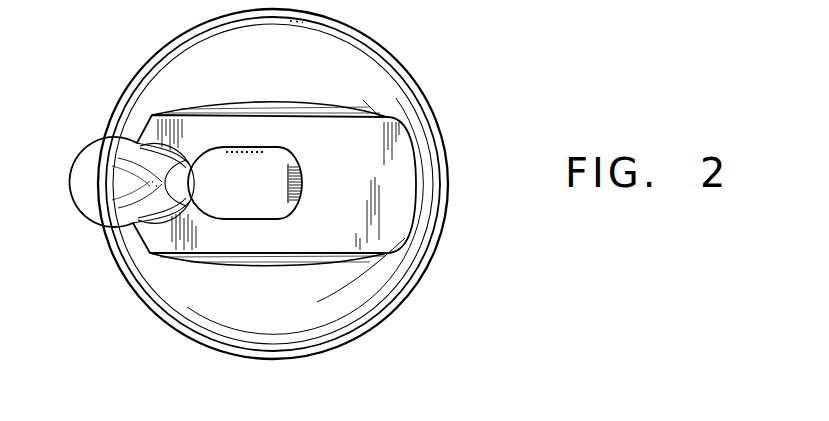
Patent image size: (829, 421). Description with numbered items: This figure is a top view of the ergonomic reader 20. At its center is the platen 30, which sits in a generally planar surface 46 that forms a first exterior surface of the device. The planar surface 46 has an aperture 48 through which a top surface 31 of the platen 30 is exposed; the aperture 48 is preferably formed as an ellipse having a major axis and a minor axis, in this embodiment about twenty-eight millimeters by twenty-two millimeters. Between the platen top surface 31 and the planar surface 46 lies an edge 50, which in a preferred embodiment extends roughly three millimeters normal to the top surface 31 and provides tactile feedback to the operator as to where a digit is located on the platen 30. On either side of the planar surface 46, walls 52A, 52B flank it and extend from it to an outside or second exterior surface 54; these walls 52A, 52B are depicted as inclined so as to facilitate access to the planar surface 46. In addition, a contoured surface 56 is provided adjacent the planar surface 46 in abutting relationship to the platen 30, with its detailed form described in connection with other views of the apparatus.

The ergonomic reader 20 is at (408, 83).
The platen 30 is at (219, 184).
The top surface of the platen 31 is at (228, 212).
The planar surface 46 is at (403, 215).
The aperture 48 is at (270, 212).
The edge 50 is at (303, 178).
The wall 52A is at (292, 106).
The wall 52B is at (250, 265).
The second exterior surface 54 is at (373, 309).
The contoured surface 56 is at (130, 190).